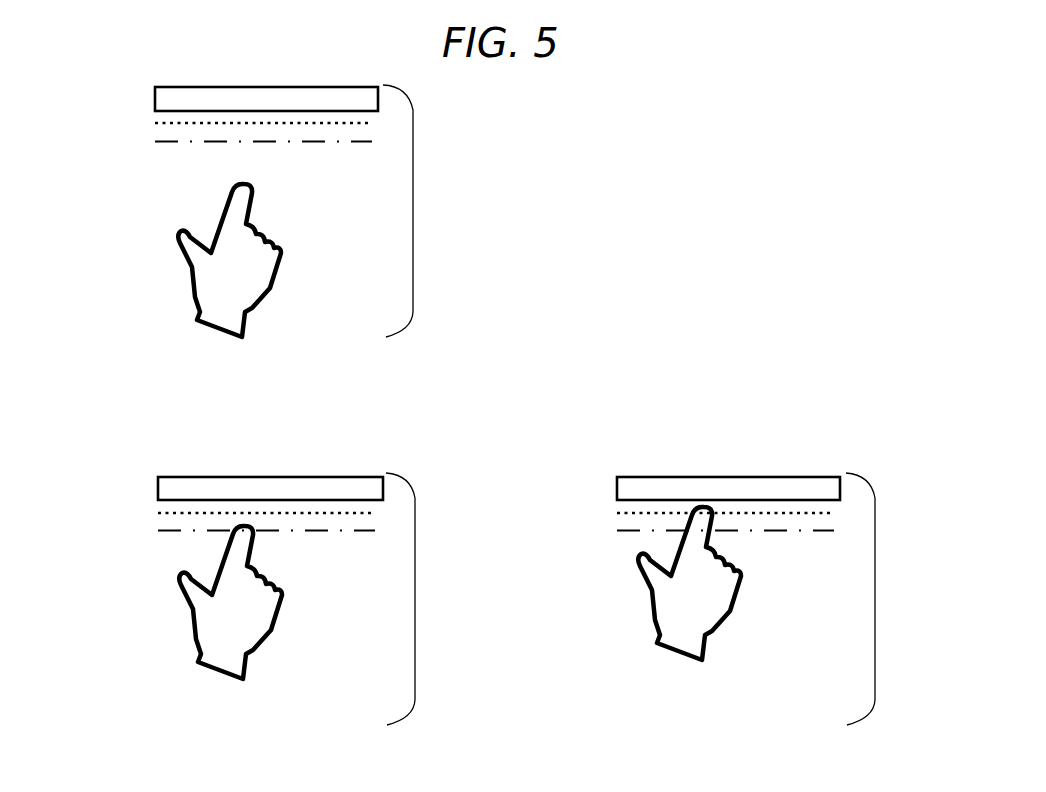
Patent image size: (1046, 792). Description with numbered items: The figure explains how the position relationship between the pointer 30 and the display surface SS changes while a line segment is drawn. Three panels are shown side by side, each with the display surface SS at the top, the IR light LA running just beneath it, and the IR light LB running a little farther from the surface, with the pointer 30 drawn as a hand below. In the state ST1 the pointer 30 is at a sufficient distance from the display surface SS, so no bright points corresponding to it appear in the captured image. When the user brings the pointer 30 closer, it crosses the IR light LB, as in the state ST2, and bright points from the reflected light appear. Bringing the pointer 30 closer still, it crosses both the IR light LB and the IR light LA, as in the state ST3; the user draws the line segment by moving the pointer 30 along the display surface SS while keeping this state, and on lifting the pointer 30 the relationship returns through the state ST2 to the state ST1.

The display surface SS is at (155, 101).
The IR light LA is at (155, 124).
The IR light LB is at (191, 142).
The pointer 30 is at (275, 282).
The state ST1 is at (413, 210).
The state ST2 is at (415, 598).
The state ST3 is at (875, 598).